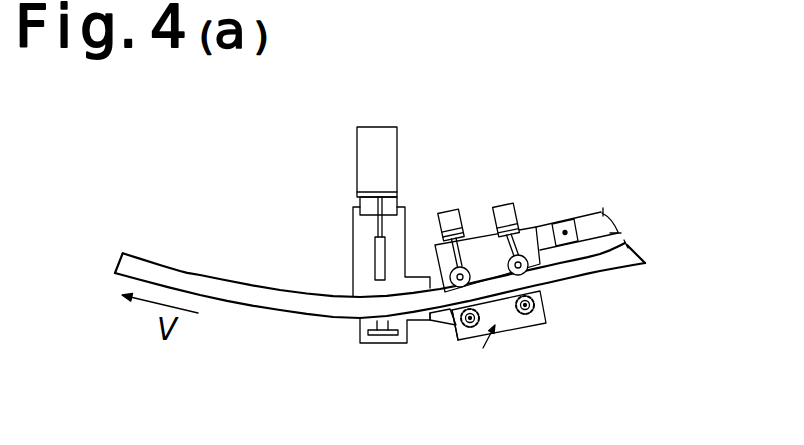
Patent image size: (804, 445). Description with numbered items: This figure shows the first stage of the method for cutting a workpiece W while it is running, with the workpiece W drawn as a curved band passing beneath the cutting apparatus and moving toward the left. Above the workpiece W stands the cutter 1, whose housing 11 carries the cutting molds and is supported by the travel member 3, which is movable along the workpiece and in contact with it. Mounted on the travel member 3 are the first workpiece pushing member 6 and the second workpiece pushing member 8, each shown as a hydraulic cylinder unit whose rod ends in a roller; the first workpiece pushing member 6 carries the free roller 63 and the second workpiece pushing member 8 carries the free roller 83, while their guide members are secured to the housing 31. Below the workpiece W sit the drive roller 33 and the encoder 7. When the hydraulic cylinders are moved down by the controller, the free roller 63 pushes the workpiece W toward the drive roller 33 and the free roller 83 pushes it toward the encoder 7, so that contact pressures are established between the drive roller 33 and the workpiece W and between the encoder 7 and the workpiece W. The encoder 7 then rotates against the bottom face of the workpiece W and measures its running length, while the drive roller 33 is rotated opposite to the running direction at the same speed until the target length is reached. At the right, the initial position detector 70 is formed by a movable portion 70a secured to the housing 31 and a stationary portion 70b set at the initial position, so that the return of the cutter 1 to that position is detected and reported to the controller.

The cutter 1 is at (357, 156).
The housing 11 is at (354, 252).
The travel member 3 is at (450, 198).
The first workpiece pushing member 6 is at (433, 219).
The free roller 63 is at (474, 237).
The housing 31 is at (464, 266).
The second workpiece pushing member 8 is at (516, 198).
The free roller 83 is at (549, 226).
The initial position detector 70 is at (643, 162).
The movable portion 70a is at (598, 210).
The stationary portion 70b is at (602, 211).
The encoder 7 is at (547, 312).
The drive roller 33 is at (452, 337).
The workpiece W is at (606, 268).